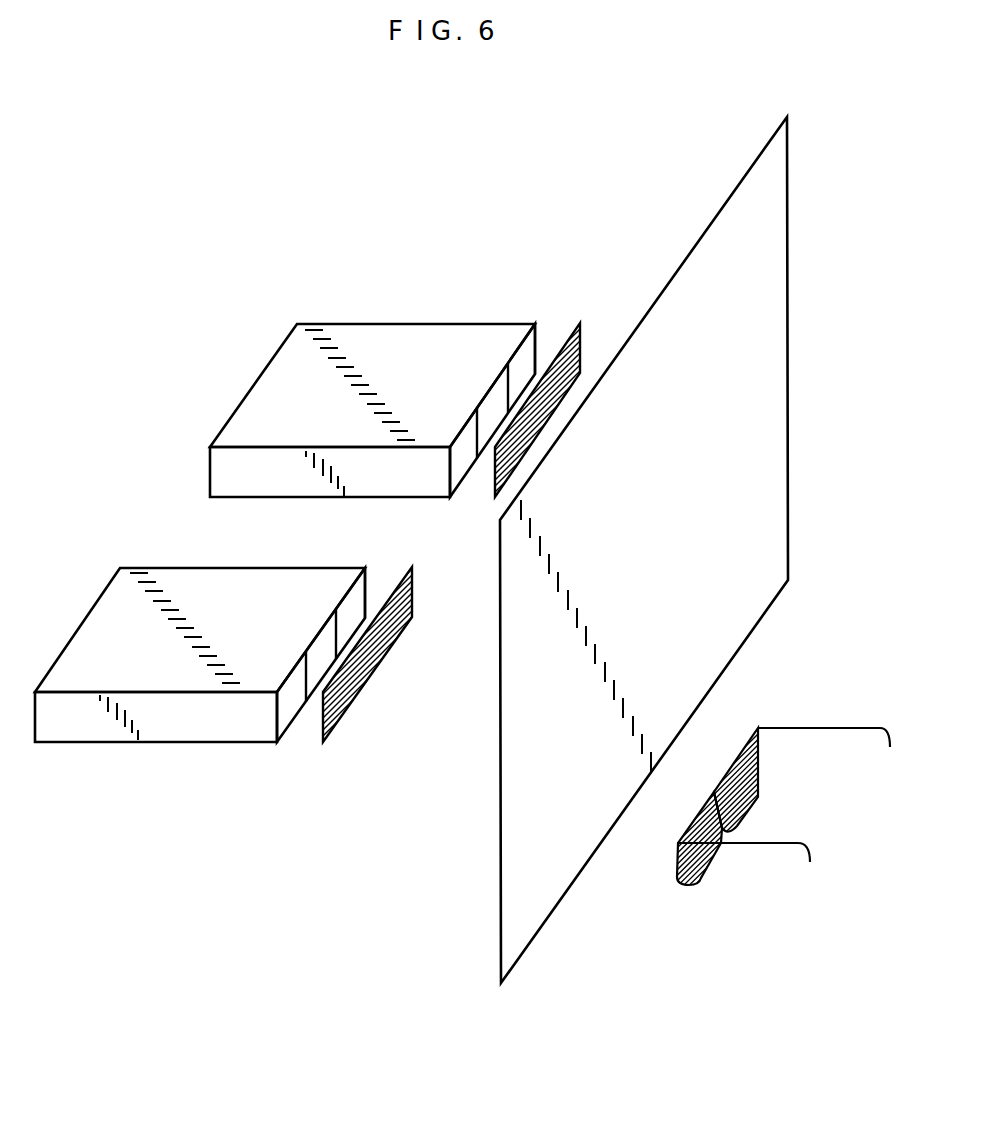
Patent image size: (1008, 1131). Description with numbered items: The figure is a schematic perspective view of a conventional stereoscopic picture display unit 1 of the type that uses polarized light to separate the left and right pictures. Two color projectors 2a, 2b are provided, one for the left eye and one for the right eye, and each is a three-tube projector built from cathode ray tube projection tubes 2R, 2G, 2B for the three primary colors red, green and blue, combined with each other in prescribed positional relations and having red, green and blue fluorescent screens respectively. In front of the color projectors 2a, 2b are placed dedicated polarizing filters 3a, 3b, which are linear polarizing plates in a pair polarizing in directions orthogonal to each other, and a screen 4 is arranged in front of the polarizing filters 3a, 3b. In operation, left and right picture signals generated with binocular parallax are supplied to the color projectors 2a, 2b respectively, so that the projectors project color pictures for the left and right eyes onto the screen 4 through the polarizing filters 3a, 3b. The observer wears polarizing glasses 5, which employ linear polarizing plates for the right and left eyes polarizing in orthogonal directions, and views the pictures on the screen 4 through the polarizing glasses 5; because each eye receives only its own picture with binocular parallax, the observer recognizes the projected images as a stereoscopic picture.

The stereoscopic picture display unit 1 is at (216, 227).
The color projector for the left eye 2a is at (170, 737).
The color projector for the right eye 2b is at (268, 490).
The CRT projection tube for red 2R is at (465, 428).
The CRT projection tube for green 2G is at (493, 392).
The CRT projection tube for blue 2B is at (525, 345).
The polarizing filter 3a is at (353, 682).
The polarizing filter 3b is at (577, 332).
The screen 4 is at (742, 200).
The polarizing glasses 5 is at (703, 870).